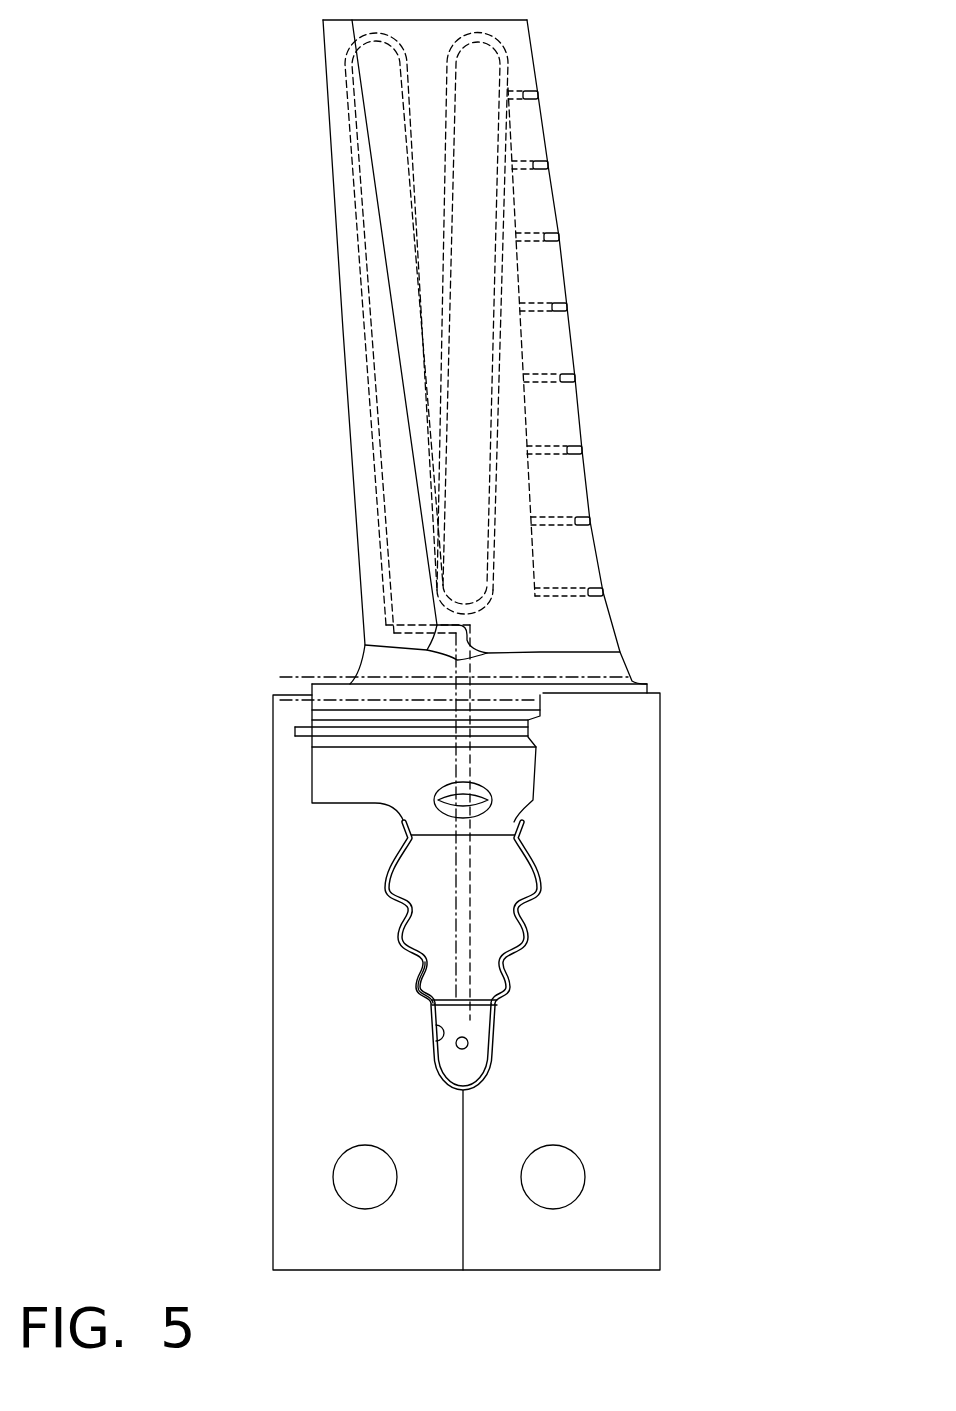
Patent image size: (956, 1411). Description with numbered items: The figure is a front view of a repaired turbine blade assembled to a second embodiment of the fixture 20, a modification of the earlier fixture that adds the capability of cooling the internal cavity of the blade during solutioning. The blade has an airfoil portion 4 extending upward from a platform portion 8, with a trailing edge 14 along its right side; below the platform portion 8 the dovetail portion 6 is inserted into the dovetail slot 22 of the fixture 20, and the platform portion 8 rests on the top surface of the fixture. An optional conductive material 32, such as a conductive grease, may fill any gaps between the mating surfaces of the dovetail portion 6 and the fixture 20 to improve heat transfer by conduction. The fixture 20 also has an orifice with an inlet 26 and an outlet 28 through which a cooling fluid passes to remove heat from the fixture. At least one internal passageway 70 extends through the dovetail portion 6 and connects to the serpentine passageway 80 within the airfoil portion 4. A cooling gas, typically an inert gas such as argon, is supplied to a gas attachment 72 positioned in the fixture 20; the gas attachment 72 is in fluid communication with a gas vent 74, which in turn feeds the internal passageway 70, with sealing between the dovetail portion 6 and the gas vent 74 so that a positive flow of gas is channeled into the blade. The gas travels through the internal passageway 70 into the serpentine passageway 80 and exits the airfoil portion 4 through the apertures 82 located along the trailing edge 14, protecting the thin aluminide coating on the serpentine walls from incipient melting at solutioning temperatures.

The airfoil portion 4 is at (360, 323).
The dovetail portion 6 is at (504, 877).
The platform portion 8 is at (334, 683).
The trailing edge 14 is at (570, 336).
The fixture 20 is at (276, 996).
The dovetail slot 22 is at (430, 1042).
The inlet 26 is at (578, 1160).
The outlet 28 is at (380, 1207).
The conductive material 32 is at (417, 978).
The internal passageway 70 is at (478, 932).
The gas attachment 72 is at (476, 1043).
The gas vent 74 is at (478, 1018).
The serpentine passageway 80 is at (528, 428).
The apertures 82 is at (538, 95).